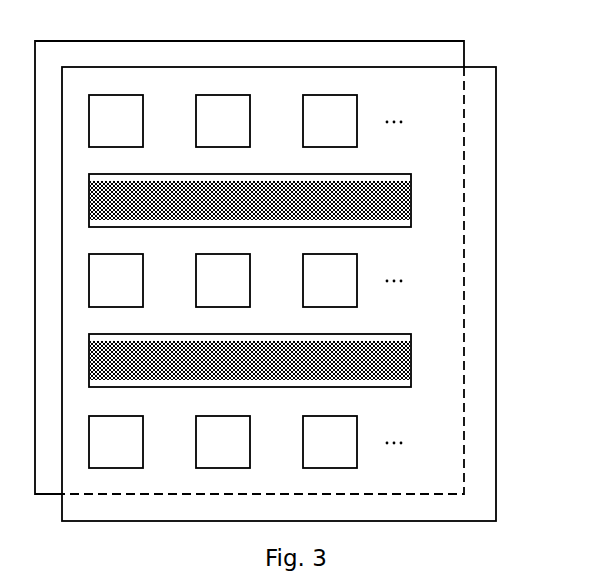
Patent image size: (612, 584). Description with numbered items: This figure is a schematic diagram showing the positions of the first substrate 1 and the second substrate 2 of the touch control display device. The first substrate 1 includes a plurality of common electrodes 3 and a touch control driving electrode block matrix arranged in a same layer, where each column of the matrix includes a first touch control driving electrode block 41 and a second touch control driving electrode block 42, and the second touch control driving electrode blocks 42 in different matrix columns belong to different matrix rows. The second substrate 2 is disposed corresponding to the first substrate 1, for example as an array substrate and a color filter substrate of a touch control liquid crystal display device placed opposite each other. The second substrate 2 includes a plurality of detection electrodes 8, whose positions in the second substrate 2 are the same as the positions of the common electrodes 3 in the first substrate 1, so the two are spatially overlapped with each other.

The first substrate 1 is at (223, 41).
The second substrate 2 is at (496, 67).
The common electrode 3 is at (383, 174).
The detection electrode 8 is at (400, 201).
The first touch control driving electrode block 41 is at (213, 95).
The second touch control driving electrode block 42 is at (106, 95).